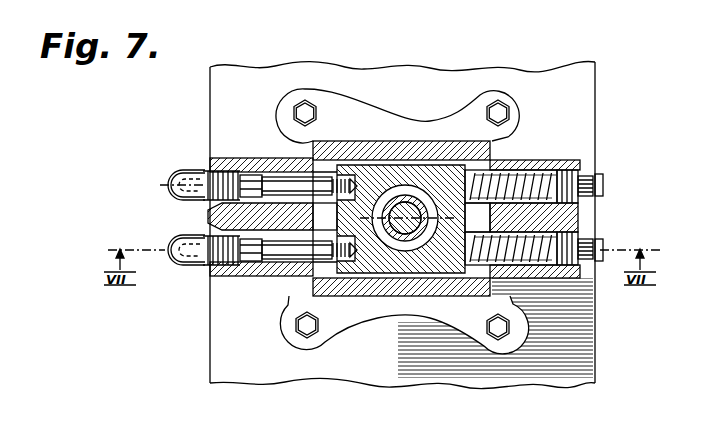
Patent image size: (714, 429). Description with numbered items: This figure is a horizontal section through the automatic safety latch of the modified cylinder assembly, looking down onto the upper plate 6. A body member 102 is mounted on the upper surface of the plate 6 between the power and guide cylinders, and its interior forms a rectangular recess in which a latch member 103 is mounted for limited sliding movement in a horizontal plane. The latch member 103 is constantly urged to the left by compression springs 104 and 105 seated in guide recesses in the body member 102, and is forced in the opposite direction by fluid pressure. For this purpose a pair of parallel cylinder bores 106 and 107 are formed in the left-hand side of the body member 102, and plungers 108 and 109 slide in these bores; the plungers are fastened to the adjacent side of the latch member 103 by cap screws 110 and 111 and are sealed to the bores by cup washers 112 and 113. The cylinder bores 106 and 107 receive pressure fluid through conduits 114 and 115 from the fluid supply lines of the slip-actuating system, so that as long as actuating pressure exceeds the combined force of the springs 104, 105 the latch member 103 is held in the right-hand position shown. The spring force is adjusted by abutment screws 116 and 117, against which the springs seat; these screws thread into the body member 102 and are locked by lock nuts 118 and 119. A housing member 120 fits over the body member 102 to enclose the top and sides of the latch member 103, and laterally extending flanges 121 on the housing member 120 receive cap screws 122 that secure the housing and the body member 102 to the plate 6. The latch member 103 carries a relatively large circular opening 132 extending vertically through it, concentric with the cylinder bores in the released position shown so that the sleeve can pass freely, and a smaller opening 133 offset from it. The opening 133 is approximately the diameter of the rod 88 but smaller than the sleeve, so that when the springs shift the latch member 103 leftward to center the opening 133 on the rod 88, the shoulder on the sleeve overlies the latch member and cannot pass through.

The upper plate 6 is at (583, 100).
The rod 88 is at (408, 162).
The body member 102 is at (563, 280).
The latch member 103 is at (398, 293).
The compression spring 104 is at (537, 162).
The compression spring 105 is at (478, 278).
The cylinder bore 106 is at (262, 167).
The cylinder bore 107 is at (253, 278).
The plunger 108 is at (327, 160).
The plunger 109 is at (307, 270).
The cap screw 110 is at (308, 181).
The cap screw 111 is at (318, 272).
The cup washer 112 is at (210, 216).
The cup washer 113 is at (267, 278).
The conduit 114 is at (179, 177).
The conduit 115 is at (192, 253).
The abutment screw 116 is at (583, 166).
The abutment screw 117 is at (583, 221).
The lock nut 118 is at (593, 168).
The lock nut 119 is at (583, 237).
The housing member 120 is at (390, 297).
The flange 121 is at (463, 112).
The cap screw 122 is at (496, 110).
The circular opening 132 is at (390, 160).
The opening 133 is at (430, 175).